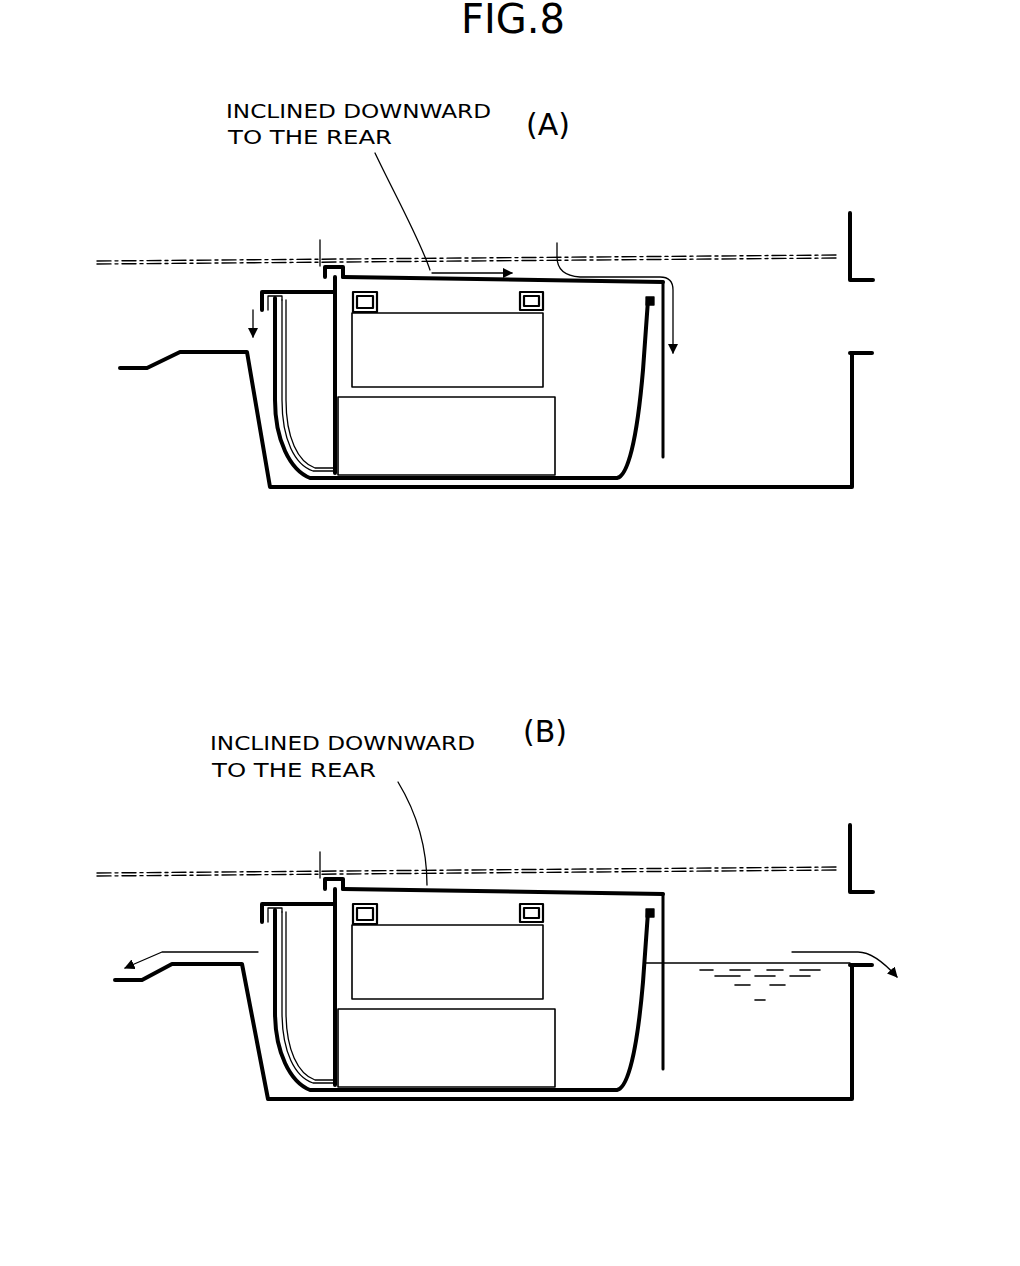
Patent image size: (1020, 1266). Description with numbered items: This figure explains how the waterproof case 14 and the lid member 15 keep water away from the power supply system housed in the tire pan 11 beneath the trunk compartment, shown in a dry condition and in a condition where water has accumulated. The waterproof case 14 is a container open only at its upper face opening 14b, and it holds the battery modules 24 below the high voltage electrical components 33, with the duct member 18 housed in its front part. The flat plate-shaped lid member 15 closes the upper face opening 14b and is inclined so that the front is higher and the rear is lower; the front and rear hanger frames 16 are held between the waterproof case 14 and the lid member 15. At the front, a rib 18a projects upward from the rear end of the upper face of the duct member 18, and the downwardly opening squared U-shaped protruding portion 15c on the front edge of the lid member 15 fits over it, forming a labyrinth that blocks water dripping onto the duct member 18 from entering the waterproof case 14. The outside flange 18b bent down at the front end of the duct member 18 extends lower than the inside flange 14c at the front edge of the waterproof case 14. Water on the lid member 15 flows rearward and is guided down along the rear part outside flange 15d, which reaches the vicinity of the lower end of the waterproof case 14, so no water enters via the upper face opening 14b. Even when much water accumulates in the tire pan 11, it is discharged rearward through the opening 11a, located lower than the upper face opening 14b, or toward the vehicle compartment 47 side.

The tire pan 11 is at (690, 490).
The opening 11a is at (852, 353).
The waterproof case 14 is at (565, 485).
The upper face opening 14b is at (650, 297).
The inside flange 14c is at (272, 318).
The lid member 15 is at (553, 277).
The protruding portion 15c is at (334, 266).
The rear part outside flange 15d is at (667, 398).
The hanger frame 16 is at (370, 291).
The duct member 18 is at (284, 427).
The rib 18a is at (322, 285).
The outside flange 18b is at (254, 302).
The battery module 24 is at (434, 451).
The high voltage electrical component 33 is at (434, 367).
The vehicle compartment 47 is at (87, 347).